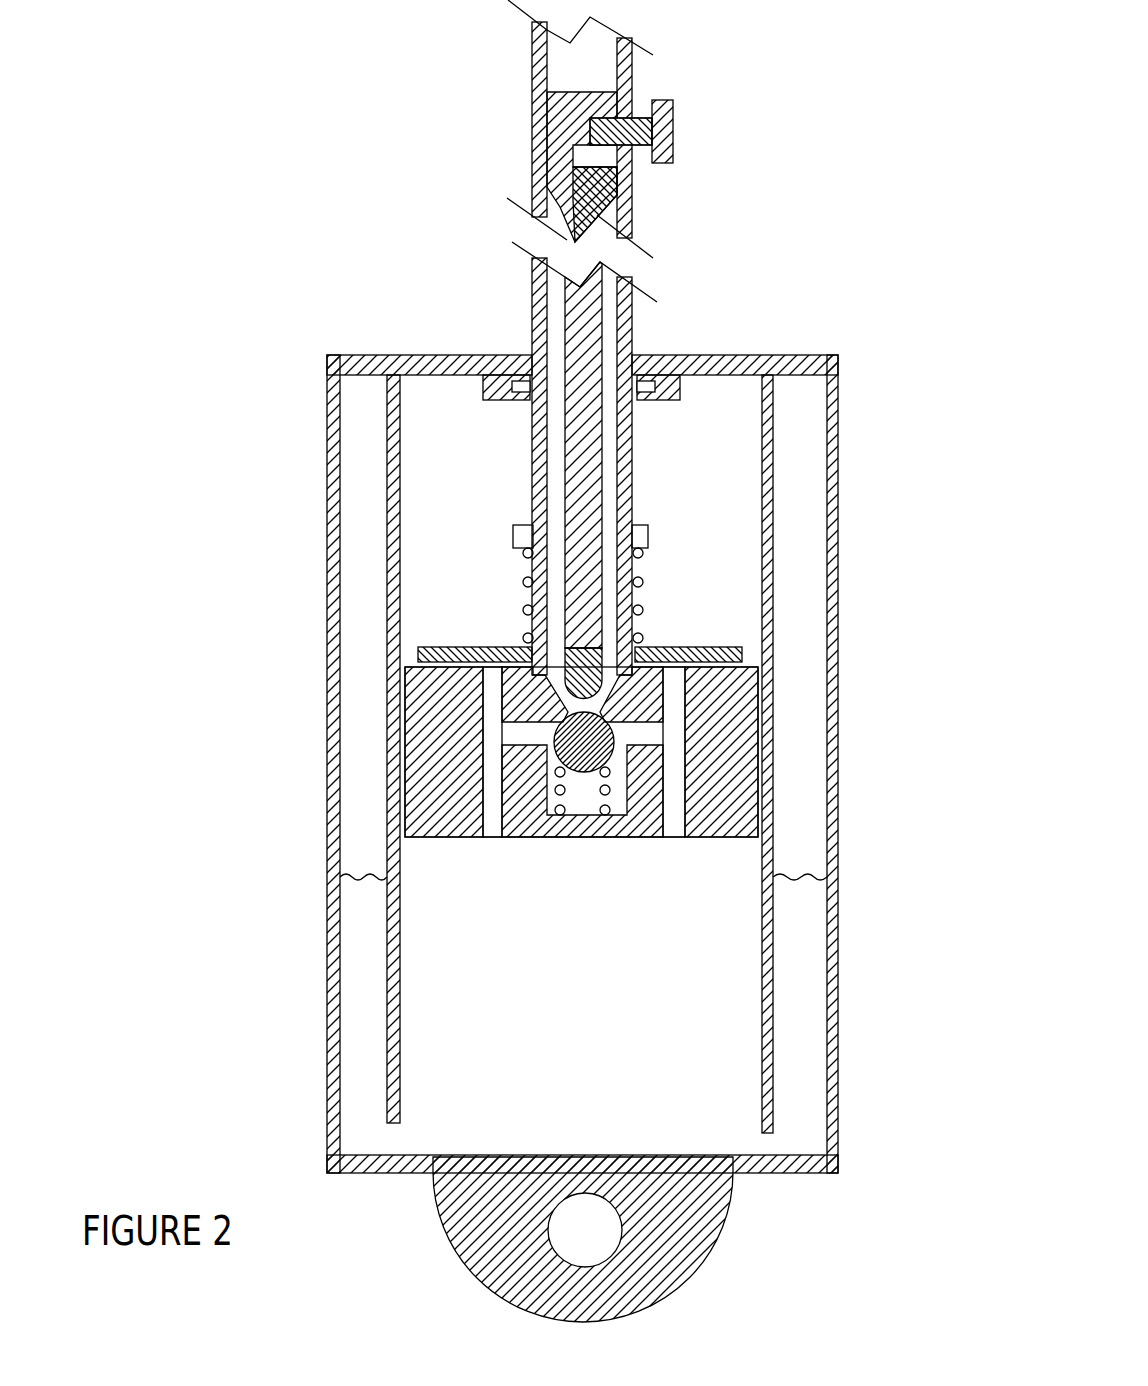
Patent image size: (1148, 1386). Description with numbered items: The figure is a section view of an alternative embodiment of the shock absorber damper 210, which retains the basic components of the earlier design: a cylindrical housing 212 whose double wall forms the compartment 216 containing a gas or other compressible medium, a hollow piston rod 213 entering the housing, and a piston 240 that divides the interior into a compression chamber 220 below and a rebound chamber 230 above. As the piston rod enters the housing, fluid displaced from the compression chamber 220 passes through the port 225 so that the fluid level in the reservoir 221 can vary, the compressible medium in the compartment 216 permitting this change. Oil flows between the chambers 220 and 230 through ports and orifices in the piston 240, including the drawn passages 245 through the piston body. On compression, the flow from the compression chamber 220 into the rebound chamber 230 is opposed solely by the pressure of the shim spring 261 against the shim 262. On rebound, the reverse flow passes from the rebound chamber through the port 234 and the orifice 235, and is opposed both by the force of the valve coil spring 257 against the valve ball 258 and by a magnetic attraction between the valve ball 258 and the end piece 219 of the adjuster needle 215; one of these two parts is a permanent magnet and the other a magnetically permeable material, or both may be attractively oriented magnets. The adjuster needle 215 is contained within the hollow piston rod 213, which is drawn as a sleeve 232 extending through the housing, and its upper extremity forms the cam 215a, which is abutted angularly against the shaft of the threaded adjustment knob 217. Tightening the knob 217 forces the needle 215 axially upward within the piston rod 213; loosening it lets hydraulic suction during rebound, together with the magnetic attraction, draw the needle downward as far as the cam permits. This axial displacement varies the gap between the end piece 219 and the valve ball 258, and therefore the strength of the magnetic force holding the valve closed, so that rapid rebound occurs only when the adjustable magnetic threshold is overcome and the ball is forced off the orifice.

The shock absorber damper 210 is at (263, 275).
The cylindrical housing 212 is at (333, 432).
The hollow piston rod 213 is at (540, 218).
The adjuster needle 215 is at (583, 340).
The cam 215a is at (620, 88).
The compartment 216 is at (362, 638).
The threaded adjustment knob 217 is at (670, 123).
The end piece 219 is at (592, 640).
The compression chamber 220 is at (618, 987).
The reservoir 221 is at (370, 880).
The port 225 is at (387, 1140).
The rebound chamber 230 is at (488, 477).
The sleeve tube 232 is at (632, 483).
The port 234 is at (535, 597).
The orifice 235 is at (530, 642).
The piston 240 is at (443, 753).
The piston flow channel 245 is at (490, 832).
The valve coil spring 257 is at (607, 795).
The valve ball 258 is at (558, 797).
The shim spring 261 is at (643, 556).
The shim 262 is at (698, 647).